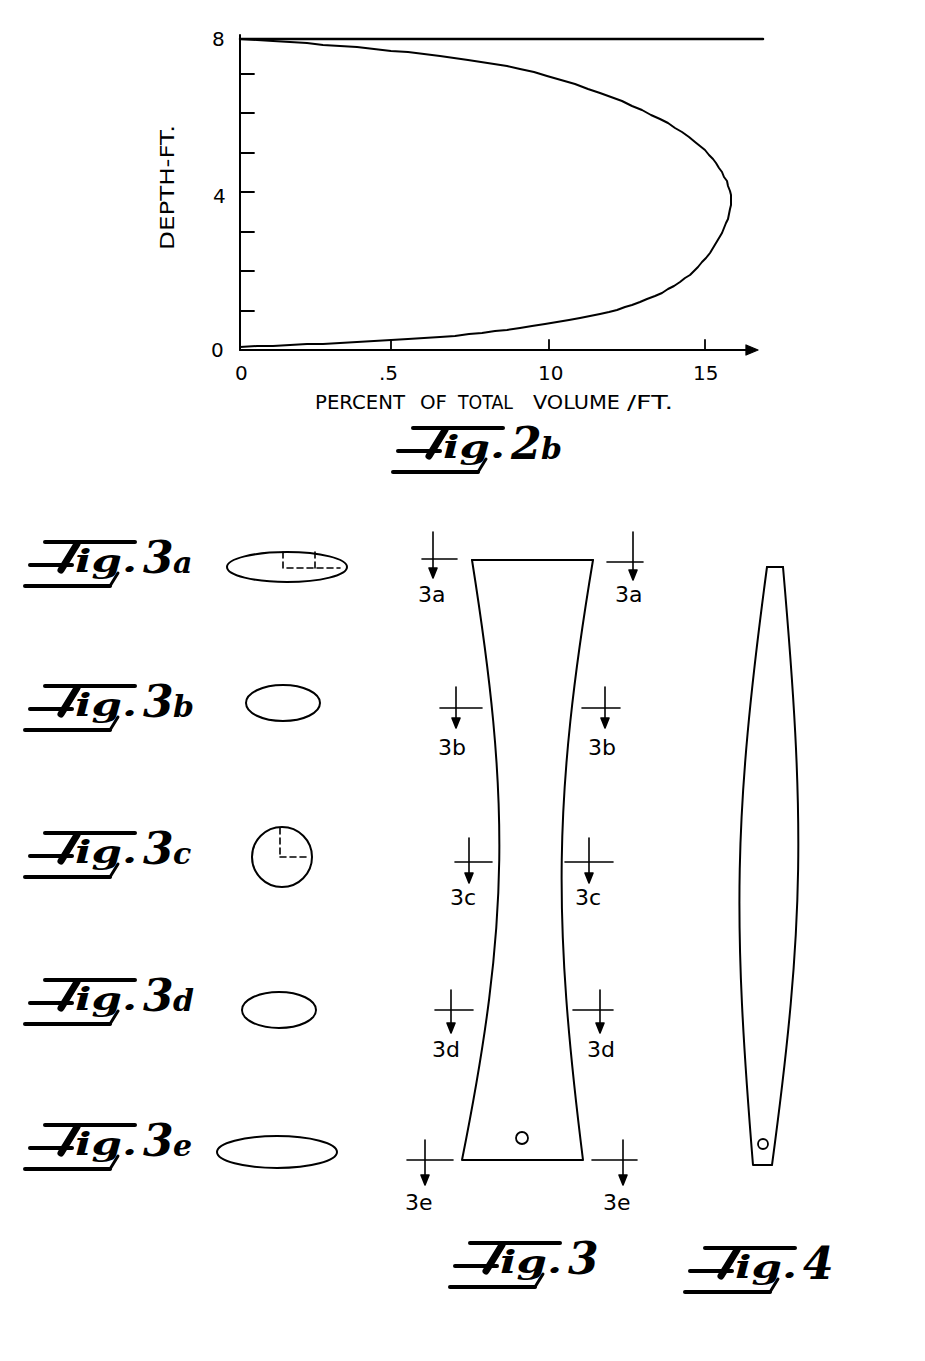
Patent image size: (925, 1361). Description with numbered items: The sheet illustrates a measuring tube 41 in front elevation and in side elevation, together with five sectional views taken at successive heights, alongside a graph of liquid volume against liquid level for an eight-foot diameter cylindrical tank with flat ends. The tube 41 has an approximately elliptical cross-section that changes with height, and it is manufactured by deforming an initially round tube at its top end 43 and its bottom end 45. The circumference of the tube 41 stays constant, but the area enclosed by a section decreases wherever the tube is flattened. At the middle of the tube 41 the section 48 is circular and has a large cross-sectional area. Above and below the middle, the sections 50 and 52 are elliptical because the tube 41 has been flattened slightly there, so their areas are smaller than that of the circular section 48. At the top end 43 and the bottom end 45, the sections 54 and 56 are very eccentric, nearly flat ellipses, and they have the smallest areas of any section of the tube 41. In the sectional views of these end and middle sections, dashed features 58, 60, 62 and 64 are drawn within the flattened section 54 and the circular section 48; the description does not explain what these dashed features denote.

In FIG. 3, the tube 41 is at (590, 652).
In FIG. 4, the tube 41 is at (753, 657).
In FIG. 3, the top end 43 is at (527, 560).
In FIG. 4, the top end 43 is at (768, 565).
In FIG. 3, the bottom end 45 is at (528, 1162).
In FIG. 4, the bottom end 45 is at (760, 1167).
In FIG. 3c, the section 48 is at (250, 862).
In FIG. 3b, the section 50 is at (303, 718).
In FIG. 3d, the section 52 is at (302, 995).
In FIG. 3a, the section 54 is at (233, 557).
In FIG. 3e, the section 56 is at (308, 1136).
In FIG. 3a, the hidden internal cavity portion 58 is at (317, 546).
In FIG. 3a, the hidden internal passage 60 is at (283, 562).
In FIG. 3c, the hidden horizontal passage 62 is at (297, 865).
In FIG. 3c, the hidden vertical passage 64 is at (280, 855).